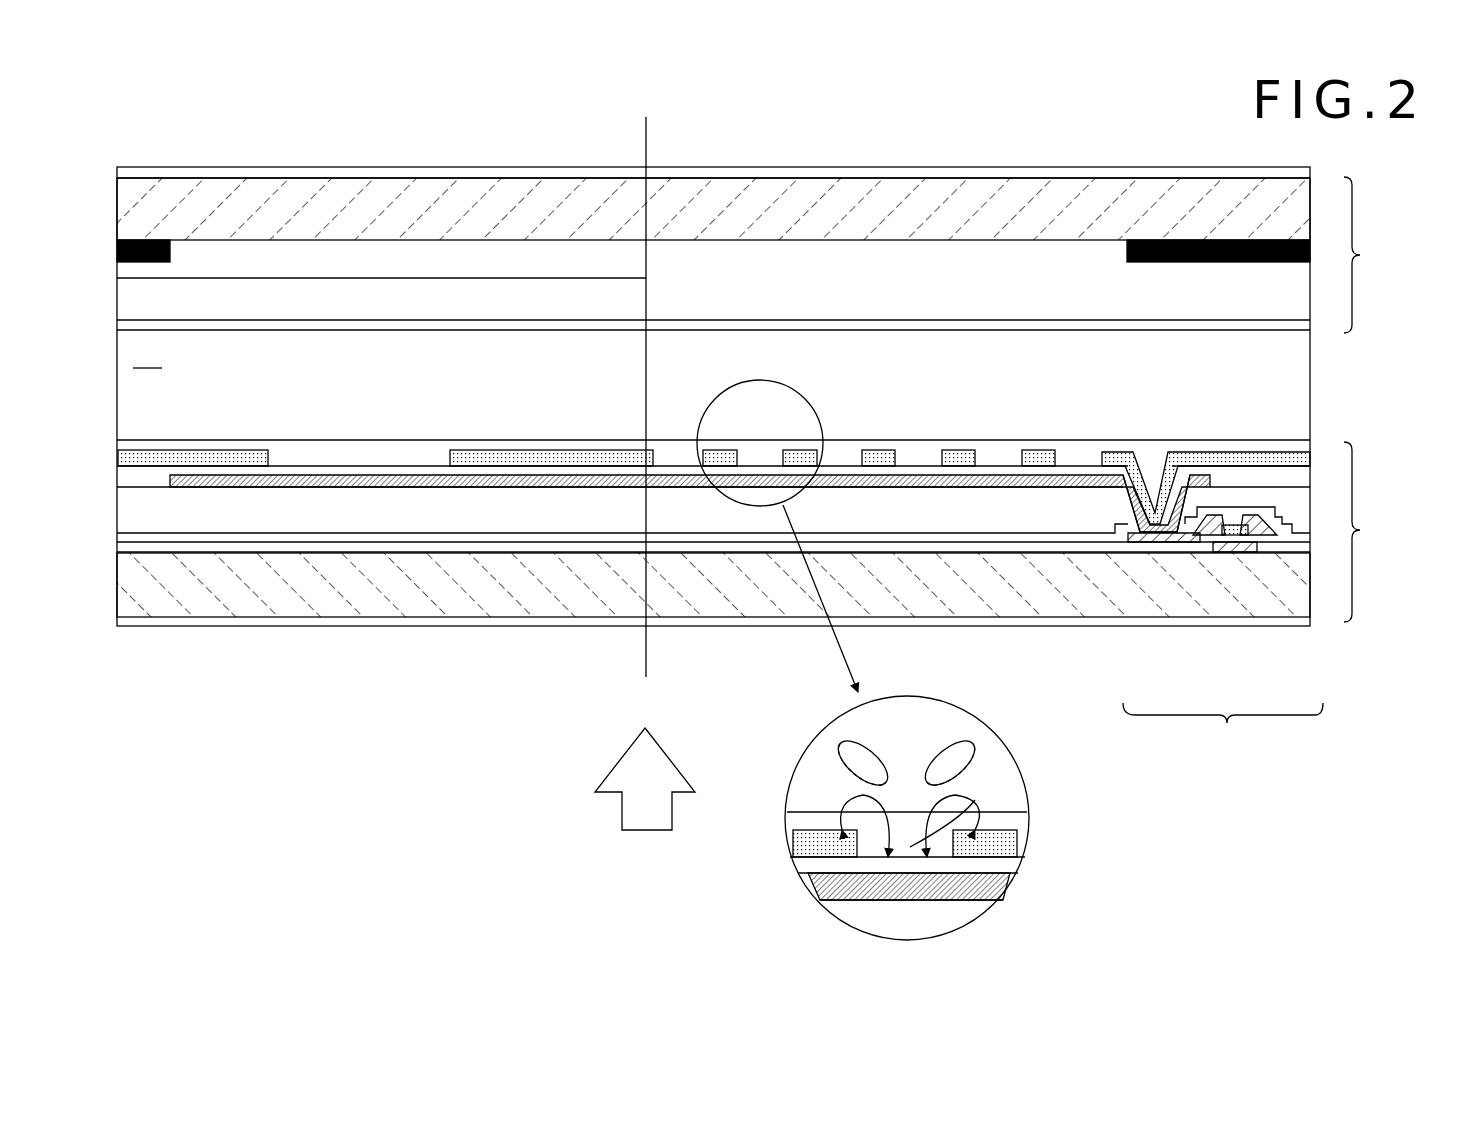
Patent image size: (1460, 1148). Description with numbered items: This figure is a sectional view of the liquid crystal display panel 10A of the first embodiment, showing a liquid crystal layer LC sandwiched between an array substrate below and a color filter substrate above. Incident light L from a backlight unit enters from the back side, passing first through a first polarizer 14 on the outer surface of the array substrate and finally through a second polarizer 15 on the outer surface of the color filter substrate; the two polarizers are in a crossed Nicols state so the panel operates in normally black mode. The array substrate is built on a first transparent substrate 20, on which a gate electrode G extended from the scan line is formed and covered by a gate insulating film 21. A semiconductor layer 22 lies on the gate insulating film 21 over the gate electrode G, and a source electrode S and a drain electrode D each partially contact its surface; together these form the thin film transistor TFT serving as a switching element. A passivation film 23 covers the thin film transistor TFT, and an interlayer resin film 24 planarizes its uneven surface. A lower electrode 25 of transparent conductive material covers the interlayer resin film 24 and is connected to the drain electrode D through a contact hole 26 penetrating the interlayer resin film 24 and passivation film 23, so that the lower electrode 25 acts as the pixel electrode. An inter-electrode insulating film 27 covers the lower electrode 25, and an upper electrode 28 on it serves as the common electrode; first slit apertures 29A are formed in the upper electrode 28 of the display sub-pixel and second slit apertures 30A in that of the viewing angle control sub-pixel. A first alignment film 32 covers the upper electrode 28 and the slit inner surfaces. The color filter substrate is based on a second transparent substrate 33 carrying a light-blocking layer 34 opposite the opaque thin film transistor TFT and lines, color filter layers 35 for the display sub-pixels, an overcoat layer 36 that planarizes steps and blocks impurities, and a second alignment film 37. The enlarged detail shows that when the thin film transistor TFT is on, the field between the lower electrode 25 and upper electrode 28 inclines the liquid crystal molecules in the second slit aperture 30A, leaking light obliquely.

The liquid crystal display panel 10A is at (160, 96).
The first polarizer 14 is at (550, 618).
The second polarizer 15 is at (1133, 172).
The first transparent substrate 20 is at (480, 580).
The gate insulating film 21 is at (405, 550).
The semiconductor layer 22 is at (1248, 543).
The passivation film 23 is at (337, 533).
The interlayer resin film 24 is at (265, 512).
The lower electrode 25 is at (315, 480).
The contact hole 26 is at (1152, 500).
The inter-electrode insulating film 27 is at (910, 466).
The upper electrode 28 is at (488, 456).
The first slit aperture 29A is at (408, 465).
The second slit aperture 30A is at (995, 460).
The first alignment film 32 is at (1110, 456).
The second transparent substrate 33 is at (1050, 205).
The light-blocking layer 34 is at (150, 250).
The color filter layer 35 is at (455, 262).
The overcoat layer 36 is at (338, 305).
The second alignment film 37 is at (858, 325).
The drain electrode D is at (1213, 527).
The gate electrode G is at (1230, 552).
The source electrode S is at (1263, 530).
The thin film transistor TFT is at (1223, 731).
The liquid crystal layer LC is at (147, 356).
The incident light L is at (645, 779).